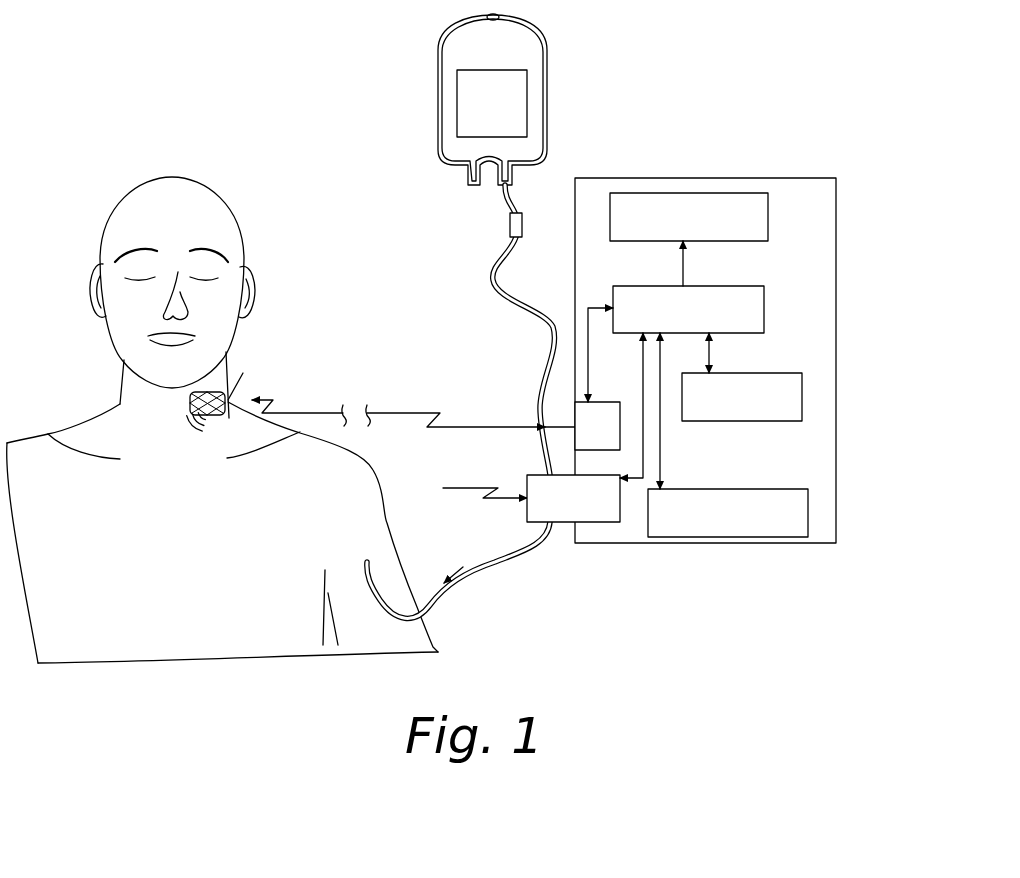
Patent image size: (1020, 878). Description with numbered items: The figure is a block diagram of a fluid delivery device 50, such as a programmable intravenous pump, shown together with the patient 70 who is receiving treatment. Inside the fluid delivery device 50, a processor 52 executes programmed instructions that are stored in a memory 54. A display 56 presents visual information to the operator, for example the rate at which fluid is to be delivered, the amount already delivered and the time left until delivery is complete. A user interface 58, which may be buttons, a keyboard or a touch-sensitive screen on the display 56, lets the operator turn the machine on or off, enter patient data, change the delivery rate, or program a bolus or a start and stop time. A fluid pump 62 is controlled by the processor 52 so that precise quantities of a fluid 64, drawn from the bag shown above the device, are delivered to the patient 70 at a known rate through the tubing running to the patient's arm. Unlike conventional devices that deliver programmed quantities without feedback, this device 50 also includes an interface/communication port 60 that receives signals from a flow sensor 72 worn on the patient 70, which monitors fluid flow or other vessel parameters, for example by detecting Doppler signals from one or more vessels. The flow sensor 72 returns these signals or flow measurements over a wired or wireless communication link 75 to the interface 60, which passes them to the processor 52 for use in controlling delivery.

The fluid delivery device 50 is at (730, 360).
The processor 52 is at (763, 308).
The memory 54 is at (802, 400).
The display 56 is at (758, 192).
The user interface 58 is at (808, 515).
The interface/communication port 60 is at (610, 423).
The fluid pump 62 is at (583, 522).
The fluid 64 is at (543, 113).
The patient 70 is at (377, 477).
The flow sensor 72 is at (225, 418).
The communication link 75 is at (480, 420).